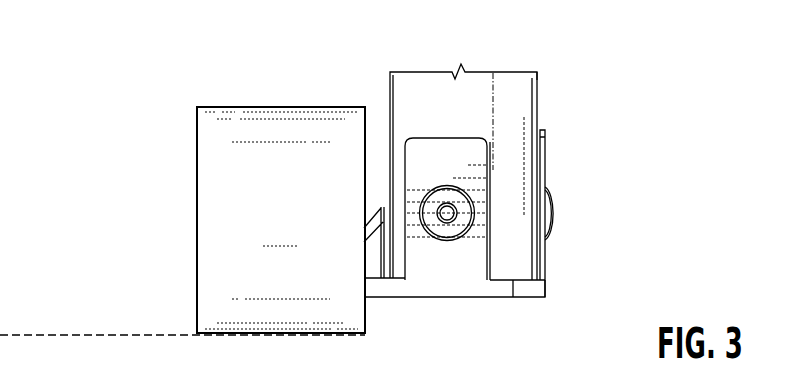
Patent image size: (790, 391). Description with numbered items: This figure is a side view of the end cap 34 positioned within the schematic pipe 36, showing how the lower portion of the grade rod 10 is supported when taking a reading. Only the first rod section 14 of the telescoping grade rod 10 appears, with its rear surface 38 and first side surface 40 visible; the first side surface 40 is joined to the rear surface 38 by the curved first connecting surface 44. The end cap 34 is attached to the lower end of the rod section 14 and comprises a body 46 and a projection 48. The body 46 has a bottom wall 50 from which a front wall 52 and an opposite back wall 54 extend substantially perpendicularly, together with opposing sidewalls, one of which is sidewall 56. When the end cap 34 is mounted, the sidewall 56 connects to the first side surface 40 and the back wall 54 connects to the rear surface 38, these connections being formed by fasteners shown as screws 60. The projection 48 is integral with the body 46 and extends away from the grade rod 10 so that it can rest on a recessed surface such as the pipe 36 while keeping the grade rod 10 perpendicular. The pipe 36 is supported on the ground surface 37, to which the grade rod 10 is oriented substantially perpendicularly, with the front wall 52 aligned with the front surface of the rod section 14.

The grade rod 10 is at (569, 77).
The rod section 14 is at (428, 70).
The end cap 34 is at (527, 319).
The schematic pipe 36 is at (195, 174).
The ground surface 37 is at (80, 333).
The rear surface 38 is at (537, 108).
The first side surface 40 is at (482, 125).
The first connecting surface 44 is at (514, 93).
The body 46 is at (551, 284).
The projection 48 is at (373, 272).
The bottom wall 50 is at (497, 292).
The front wall 52 is at (381, 203).
The back wall 54 is at (545, 262).
The sidewall 56 is at (466, 270).
The screws 60 is at (443, 228).